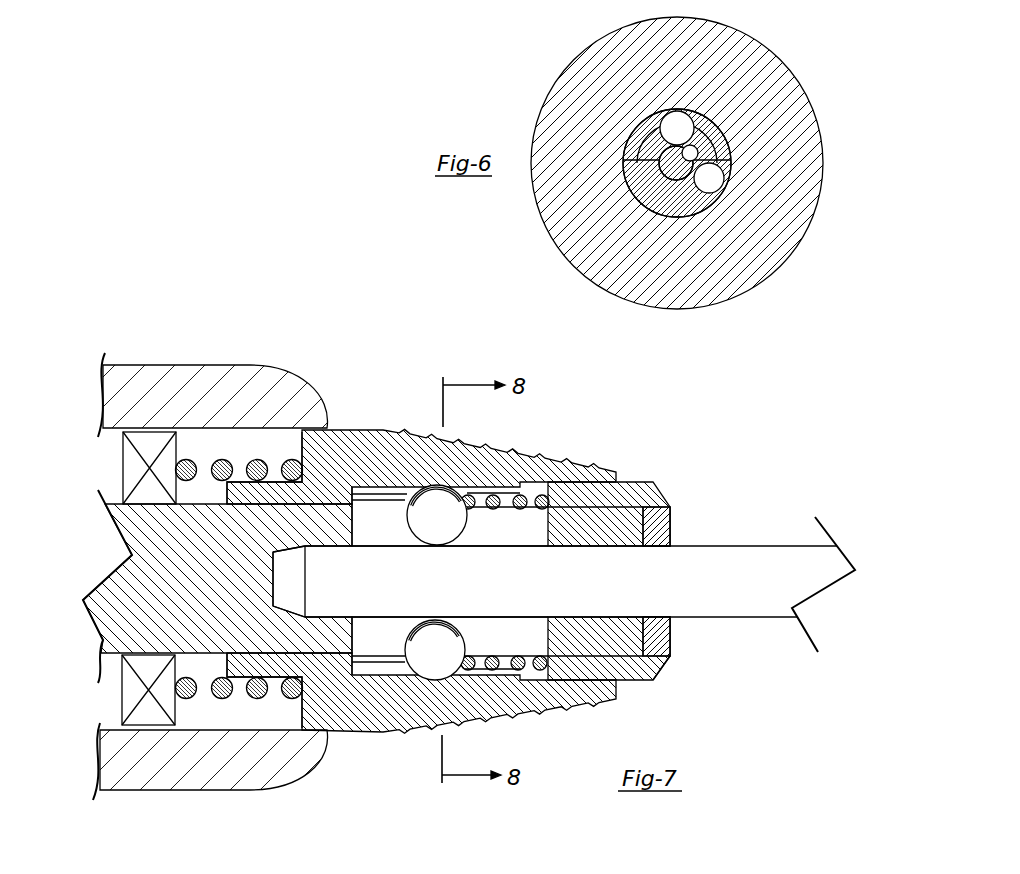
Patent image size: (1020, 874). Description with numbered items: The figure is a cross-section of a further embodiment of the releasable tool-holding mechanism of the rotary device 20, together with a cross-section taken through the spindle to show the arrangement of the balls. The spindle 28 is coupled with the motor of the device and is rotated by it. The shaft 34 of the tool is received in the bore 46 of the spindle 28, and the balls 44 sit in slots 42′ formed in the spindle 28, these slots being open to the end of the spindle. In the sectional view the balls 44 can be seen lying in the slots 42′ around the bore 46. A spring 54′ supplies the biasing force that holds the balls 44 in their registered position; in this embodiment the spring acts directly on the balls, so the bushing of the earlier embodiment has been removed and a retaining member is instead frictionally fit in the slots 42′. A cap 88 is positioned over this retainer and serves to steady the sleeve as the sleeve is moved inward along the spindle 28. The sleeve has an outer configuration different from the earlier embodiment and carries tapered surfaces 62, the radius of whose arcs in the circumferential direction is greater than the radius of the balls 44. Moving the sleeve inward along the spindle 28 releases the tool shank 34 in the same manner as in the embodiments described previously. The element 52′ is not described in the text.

In FIG. 7, the rotary device 20 is at (210, 392).
In FIG. 7, the spindle 28 is at (123, 531).
In FIG. 7, the shaft 34 is at (738, 590).
In FIG. 6, the slots 42′ is at (662, 195).
In FIG. 7, the slots 42′ is at (540, 525).
In FIG. 6, the balls 44 is at (677, 125).
In FIG. 7, the balls 44 is at (437, 512).
In FIG. 6, the bore 46 is at (693, 157).
In FIG. 7, the retaining block 52′ is at (605, 505).
In FIG. 7, the spring 54′ is at (256, 468).
In FIG. 7, the tapered surfaces 62 is at (482, 489).
In FIG. 7, the cap 88 is at (660, 520).